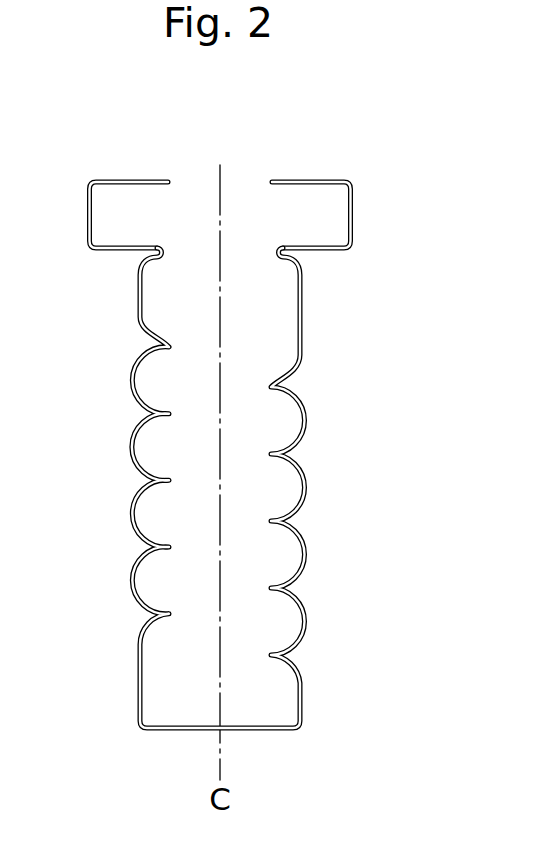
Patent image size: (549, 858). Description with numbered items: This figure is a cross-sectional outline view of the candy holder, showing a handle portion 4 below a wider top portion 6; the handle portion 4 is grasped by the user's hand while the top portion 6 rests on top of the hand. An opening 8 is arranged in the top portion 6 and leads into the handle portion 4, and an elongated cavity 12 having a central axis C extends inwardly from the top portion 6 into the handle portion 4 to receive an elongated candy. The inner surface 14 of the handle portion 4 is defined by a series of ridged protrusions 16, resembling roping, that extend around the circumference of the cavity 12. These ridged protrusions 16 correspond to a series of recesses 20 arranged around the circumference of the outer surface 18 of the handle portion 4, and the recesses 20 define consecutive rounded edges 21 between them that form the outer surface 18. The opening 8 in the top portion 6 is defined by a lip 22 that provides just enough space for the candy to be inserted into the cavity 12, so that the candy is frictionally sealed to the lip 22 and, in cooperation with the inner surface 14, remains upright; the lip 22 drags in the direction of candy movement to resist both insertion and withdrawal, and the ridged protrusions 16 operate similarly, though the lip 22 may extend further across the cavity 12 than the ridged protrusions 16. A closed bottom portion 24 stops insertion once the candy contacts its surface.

The handle portion 4 is at (376, 256).
The top portion 6 is at (376, 178).
The opening 8 is at (221, 146).
The elongated cavity 12 is at (268, 406).
The inner surface 14 is at (143, 375).
The ridged protrusions 16 is at (169, 481).
The outer surface 18 is at (140, 362).
The recesses 20 is at (138, 415).
The rounded edges 21 is at (140, 385).
The lip 22 is at (178, 162).
The closed bottom portion 24 is at (170, 696).